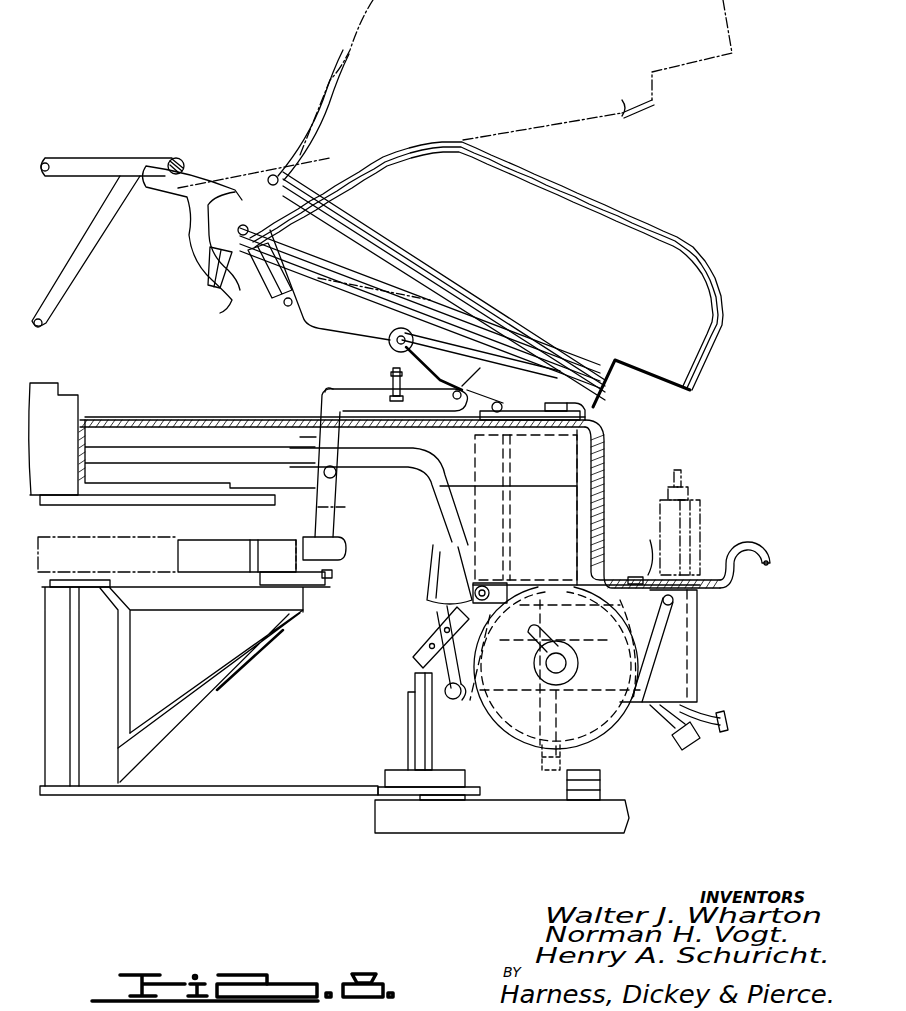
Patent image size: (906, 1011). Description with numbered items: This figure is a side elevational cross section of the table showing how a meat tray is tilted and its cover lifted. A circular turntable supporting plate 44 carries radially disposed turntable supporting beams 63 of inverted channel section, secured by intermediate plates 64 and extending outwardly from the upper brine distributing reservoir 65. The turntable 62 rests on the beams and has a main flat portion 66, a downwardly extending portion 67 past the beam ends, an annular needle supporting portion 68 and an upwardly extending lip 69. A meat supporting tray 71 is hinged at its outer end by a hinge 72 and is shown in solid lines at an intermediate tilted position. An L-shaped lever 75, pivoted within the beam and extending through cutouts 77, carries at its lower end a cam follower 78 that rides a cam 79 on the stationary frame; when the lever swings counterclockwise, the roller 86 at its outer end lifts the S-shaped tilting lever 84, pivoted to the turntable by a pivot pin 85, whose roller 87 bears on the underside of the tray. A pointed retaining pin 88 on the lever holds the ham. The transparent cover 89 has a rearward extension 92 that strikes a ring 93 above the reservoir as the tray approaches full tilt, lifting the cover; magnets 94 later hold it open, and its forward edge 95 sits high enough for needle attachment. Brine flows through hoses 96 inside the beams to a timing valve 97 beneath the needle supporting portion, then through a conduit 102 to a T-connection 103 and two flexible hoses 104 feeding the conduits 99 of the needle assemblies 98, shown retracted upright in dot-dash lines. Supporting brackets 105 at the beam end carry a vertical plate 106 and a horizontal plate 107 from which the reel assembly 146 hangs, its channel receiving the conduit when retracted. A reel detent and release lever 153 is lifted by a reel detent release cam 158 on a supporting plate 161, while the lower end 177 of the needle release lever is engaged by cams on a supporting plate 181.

The ring 93 is at (95, 162).
The rearward extension 92 is at (183, 185).
The magnets 94 is at (216, 300).
The cover 89 is at (597, 207).
The forward edge 95 is at (685, 392).
The tilting lever 84 is at (453, 350).
The pivot pin 85 is at (557, 364).
The meat supporting tray 71 is at (540, 347).
The roller 87 is at (387, 340).
The retaining pin 88 is at (398, 403).
The roller 86 is at (466, 402).
The hinge 72 is at (587, 413).
The turntable 62 is at (268, 412).
The main flat portion 66 is at (195, 420).
The upper brine distributing reservoir 65 is at (45, 410).
The conduits or hoses 96 is at (118, 452).
The intermediate plates 64 is at (145, 490).
The turntable supporting plate 44 is at (227, 493).
The L-shaped lever 75 is at (300, 437).
The turntable supporting beams 63 is at (380, 478).
The cam follower 78 is at (317, 546).
The cam 79 is at (320, 586).
The supporting brackets 105 is at (487, 507).
The flexible hoses 104 is at (433, 578).
The reel detent and release lever 153 is at (433, 634).
The conduit 102 is at (446, 708).
The T-connection 103 is at (436, 716).
The reel detent release cam 158 is at (412, 682).
The supporting plate 161 is at (395, 770).
The lower end of needle release lever 177 is at (542, 765).
The supporting plate 181 is at (600, 783).
The reel assembly 146 is at (606, 744).
The horizontal plate 107 is at (510, 580).
The vertical plate 106 is at (582, 510).
The downwardly extending portion 67 is at (610, 480).
The lip 69 is at (752, 548).
The annular needle supporting portion 68 is at (648, 574).
The needle assembly 98 is at (707, 541).
The hose or conduit 99 is at (680, 624).
The timing valve 97 is at (670, 650).
The cutouts 77 is at (230, 690).